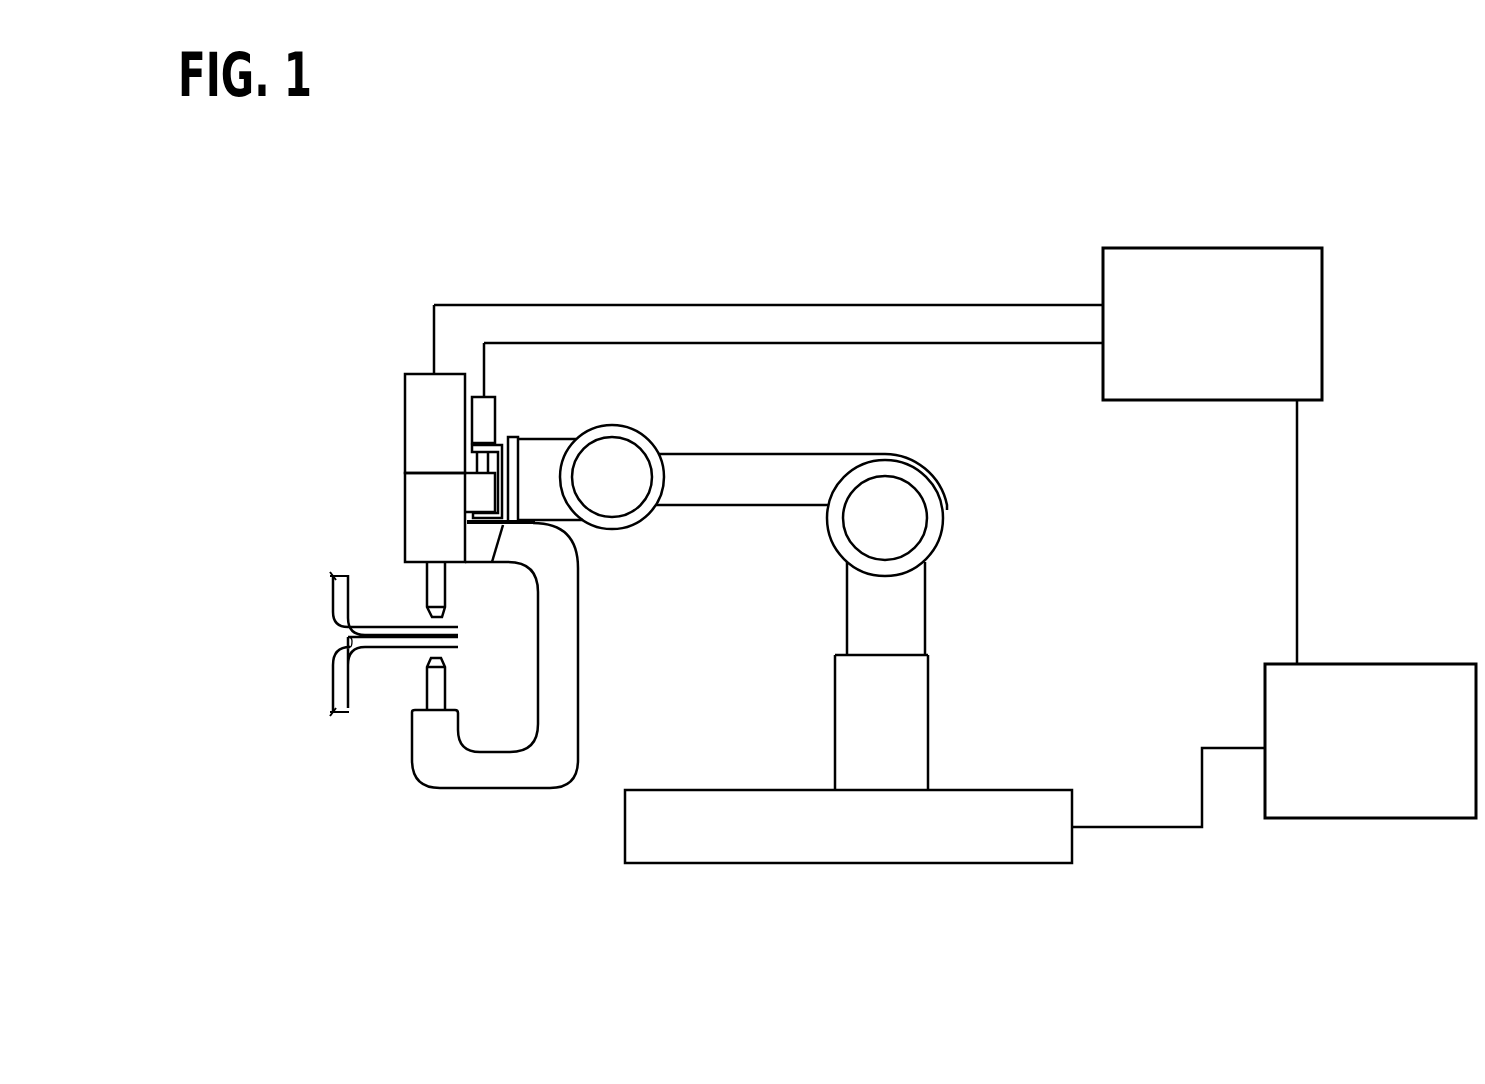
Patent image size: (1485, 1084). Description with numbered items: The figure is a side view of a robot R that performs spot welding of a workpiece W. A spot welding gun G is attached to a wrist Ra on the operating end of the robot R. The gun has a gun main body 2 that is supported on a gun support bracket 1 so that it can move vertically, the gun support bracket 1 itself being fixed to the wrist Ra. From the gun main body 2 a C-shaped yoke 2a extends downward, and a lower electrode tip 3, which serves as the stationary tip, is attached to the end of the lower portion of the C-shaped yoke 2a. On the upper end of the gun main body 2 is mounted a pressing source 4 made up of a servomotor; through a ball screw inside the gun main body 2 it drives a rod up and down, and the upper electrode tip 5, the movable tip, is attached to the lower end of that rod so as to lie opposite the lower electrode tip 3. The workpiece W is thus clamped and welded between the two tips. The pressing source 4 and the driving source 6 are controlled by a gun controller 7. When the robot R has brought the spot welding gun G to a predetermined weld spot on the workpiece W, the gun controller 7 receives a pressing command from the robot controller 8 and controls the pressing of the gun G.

The gun support bracket 1 is at (509, 452).
The gun main body 2 is at (418, 524).
The C-shaped yoke 2a is at (572, 666).
The lower electrode tip 3 is at (440, 682).
The pressing source 4 is at (427, 420).
The upper electrode tip 5 is at (437, 588).
The driving source 6 is at (487, 412).
The gun controller 7 is at (1190, 268).
The robot controller 8 is at (1400, 680).
The spot welding gun G is at (396, 478).
The robot R is at (903, 452).
The wrist Ra is at (548, 448).
The workpiece W is at (484, 628).